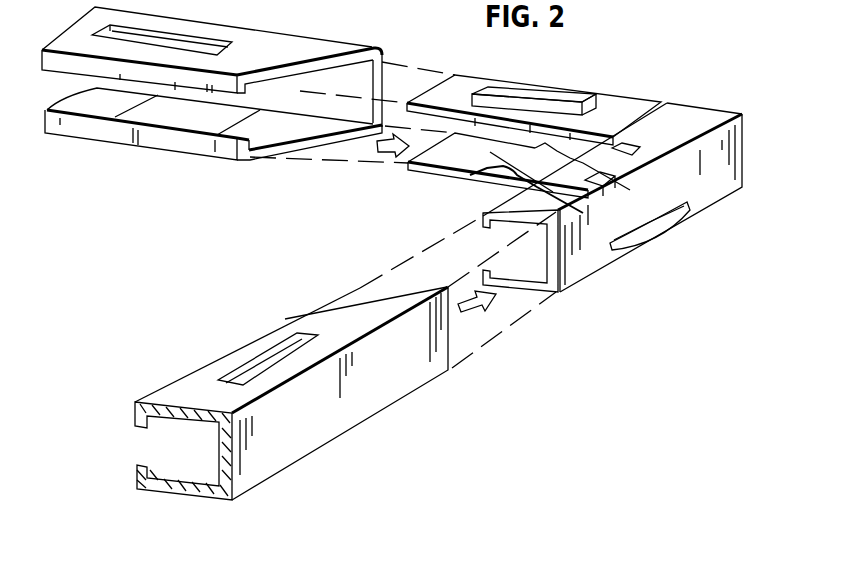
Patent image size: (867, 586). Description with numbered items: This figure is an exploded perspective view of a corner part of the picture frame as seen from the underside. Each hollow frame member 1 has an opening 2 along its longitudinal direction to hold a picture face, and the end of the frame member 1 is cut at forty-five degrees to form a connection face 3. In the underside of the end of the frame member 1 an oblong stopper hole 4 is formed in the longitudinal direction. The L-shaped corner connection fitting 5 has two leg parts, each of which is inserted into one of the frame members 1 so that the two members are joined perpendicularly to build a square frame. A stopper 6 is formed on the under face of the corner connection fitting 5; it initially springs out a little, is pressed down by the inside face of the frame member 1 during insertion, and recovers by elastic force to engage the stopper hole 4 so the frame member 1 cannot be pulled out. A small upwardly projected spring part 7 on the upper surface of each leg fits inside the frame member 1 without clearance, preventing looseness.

The hollow frame member 1 is at (273, 42).
The opening 2 is at (171, 109).
The connection face 3 is at (320, 65).
The oblong stopper hole 4 is at (179, 42).
The corner connection fitting 5 is at (682, 115).
The stopper 6 is at (555, 97).
The spring part 7 is at (471, 176).